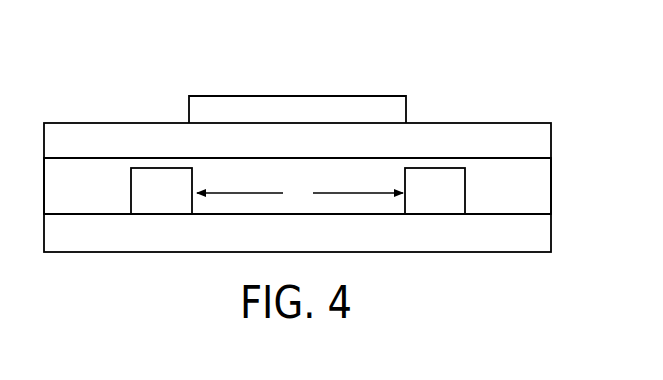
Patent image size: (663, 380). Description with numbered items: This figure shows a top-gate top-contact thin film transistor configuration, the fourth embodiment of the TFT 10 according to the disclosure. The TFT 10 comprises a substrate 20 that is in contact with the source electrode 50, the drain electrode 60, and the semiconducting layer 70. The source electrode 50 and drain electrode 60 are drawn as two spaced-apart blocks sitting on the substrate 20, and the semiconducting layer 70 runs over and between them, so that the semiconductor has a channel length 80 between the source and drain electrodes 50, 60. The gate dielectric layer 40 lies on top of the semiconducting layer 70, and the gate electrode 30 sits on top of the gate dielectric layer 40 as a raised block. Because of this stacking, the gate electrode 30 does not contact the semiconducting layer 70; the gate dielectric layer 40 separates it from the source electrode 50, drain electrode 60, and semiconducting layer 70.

The TFT 10 is at (147, 78).
The substrate 20 is at (287, 242).
The gate electrode 30 is at (300, 105).
The gate dielectric layer 40 is at (287, 149).
The source electrode 50 is at (150, 202).
The drain electrode 60 is at (425, 202).
The semiconducting layer 70 is at (60, 196).
The channel length 80 is at (300, 188).